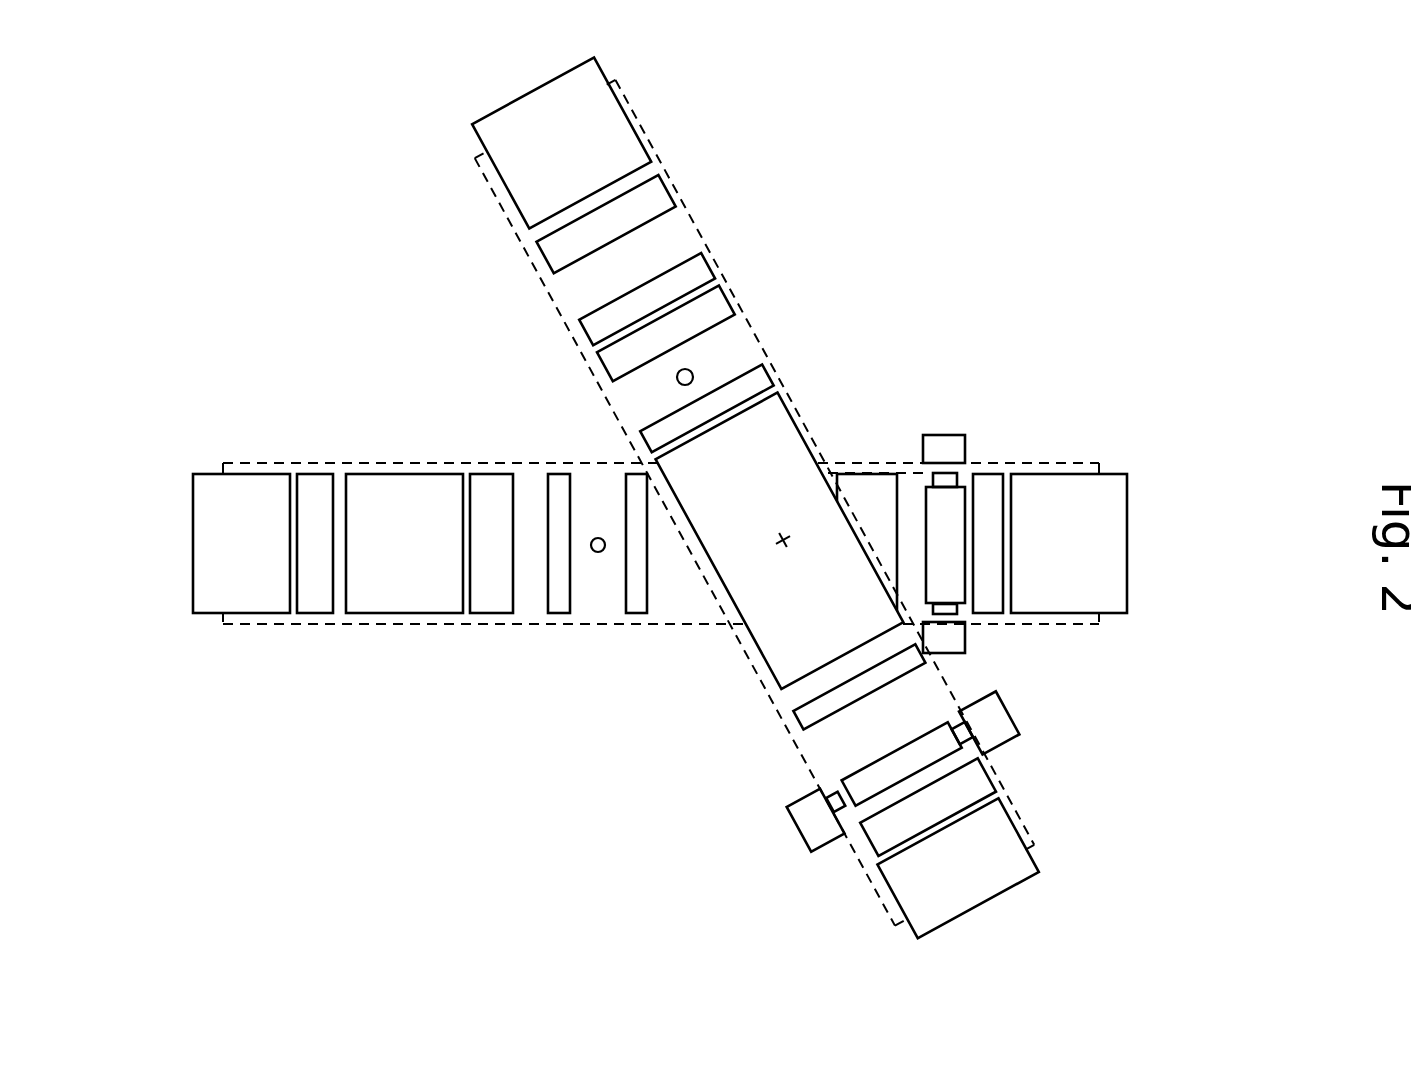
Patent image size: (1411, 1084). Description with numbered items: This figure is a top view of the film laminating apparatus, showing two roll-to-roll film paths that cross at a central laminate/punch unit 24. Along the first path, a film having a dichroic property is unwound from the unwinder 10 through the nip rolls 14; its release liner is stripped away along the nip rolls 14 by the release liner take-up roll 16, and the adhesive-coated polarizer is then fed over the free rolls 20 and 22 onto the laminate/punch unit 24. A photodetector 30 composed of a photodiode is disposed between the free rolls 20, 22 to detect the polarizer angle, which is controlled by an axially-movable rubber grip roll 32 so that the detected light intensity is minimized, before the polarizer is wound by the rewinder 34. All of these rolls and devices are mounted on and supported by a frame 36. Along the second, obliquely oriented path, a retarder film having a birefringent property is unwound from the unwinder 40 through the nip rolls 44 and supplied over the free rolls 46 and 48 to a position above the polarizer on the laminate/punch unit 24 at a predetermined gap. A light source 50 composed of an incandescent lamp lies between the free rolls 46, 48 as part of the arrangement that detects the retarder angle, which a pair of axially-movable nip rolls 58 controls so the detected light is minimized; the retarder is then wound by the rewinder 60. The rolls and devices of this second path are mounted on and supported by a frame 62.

The unwinder 10 is at (388, 597).
The nip rolls 14 is at (485, 597).
The release liner take-up roll 16 is at (212, 584).
The free roll 20 is at (558, 597).
The free roll 22 is at (638, 603).
The laminate/punch unit 24 is at (783, 453).
The photodetector 30 is at (596, 537).
The rubber grip roll 32 is at (948, 498).
The rewinder 34 is at (1107, 583).
The frame 36 is at (415, 463).
The unwinder 40 is at (495, 127).
The nip rolls 44 is at (557, 253).
The free roll 46 is at (597, 328).
The free roll 48 is at (752, 378).
The light source 50 is at (693, 374).
The nip rolls 58 is at (937, 755).
The rewinder 60 is at (980, 888).
The frame 62 is at (642, 107).